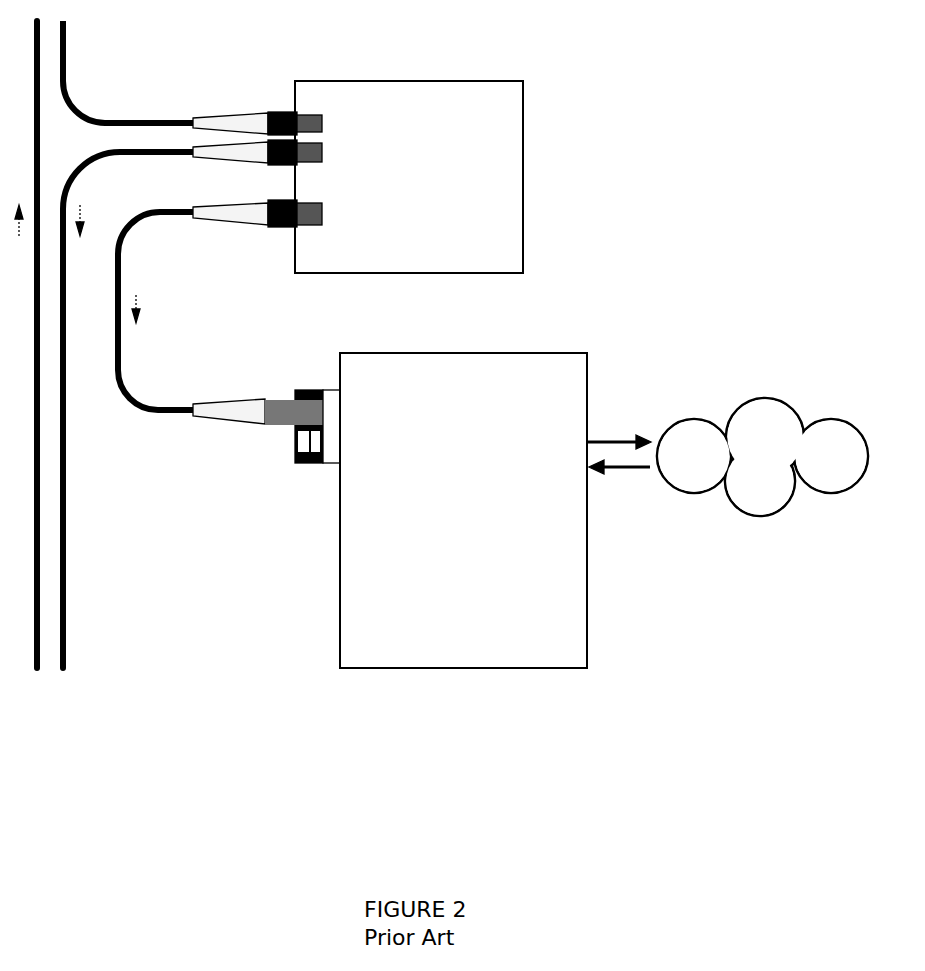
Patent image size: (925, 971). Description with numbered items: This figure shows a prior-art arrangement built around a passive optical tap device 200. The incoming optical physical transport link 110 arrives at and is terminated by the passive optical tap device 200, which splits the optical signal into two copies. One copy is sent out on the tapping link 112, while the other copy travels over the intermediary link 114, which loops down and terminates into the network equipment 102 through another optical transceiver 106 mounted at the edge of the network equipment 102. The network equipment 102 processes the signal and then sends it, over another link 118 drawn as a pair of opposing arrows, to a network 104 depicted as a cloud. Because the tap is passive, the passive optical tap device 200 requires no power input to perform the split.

The network equipment 102 is at (587, 618).
The network 104 is at (765, 516).
The optical transceiver 106 is at (313, 465).
The optical physical transport link 110 is at (138, 119).
The tapping link 112 is at (118, 154).
The intermediary link 114 is at (165, 213).
The link 118 is at (630, 437).
The passive optical tap device 200 is at (521, 177).